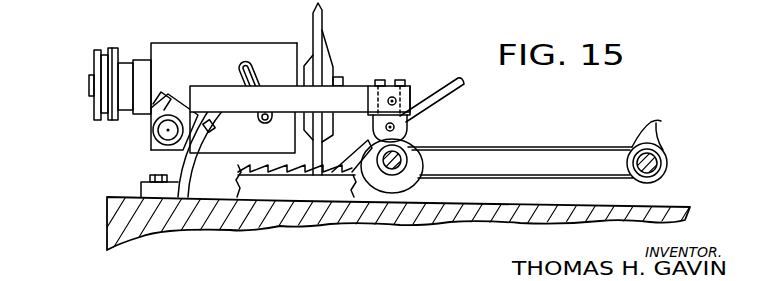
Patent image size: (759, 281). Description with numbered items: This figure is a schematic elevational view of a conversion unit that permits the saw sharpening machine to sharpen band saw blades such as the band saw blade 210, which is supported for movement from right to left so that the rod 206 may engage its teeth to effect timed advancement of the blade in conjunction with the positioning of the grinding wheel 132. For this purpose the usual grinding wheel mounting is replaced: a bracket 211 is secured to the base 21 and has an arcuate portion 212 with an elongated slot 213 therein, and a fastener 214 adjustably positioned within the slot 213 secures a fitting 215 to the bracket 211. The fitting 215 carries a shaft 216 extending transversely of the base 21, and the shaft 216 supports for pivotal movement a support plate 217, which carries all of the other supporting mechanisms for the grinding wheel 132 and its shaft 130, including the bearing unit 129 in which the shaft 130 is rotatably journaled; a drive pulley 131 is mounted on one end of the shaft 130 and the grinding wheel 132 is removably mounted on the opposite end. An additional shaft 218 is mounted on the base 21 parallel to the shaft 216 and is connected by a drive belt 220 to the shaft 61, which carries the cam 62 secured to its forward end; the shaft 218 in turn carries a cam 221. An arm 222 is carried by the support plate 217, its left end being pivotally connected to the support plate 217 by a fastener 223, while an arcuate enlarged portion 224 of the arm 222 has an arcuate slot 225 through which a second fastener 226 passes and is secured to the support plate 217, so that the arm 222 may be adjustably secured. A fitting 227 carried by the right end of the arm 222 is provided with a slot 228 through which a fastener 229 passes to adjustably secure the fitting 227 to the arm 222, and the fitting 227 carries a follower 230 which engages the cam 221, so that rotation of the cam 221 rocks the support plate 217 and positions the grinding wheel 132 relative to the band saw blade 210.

The base 21 is at (100, 228).
The shaft 61 is at (663, 150).
The cam 62 is at (661, 124).
The bearing unit 129 is at (144, 59).
The shaft 130 is at (89, 88).
The drive pulley 131 is at (107, 48).
The grinding wheel 132 is at (322, 30).
The rod 206 is at (443, 97).
The band saw blade 210 is at (307, 198).
The bracket 211 is at (187, 181).
The arcuate portion 212 is at (223, 88).
The elongated slot 213 is at (196, 153).
The fastener 214 is at (212, 128).
The fitting 215 is at (180, 93).
The shaft 216 is at (166, 130).
The support plate 217 is at (268, 55).
The shaft 218 is at (399, 156).
The drive belt 220 is at (533, 146).
The cam 221 is at (410, 178).
The arm 222 is at (350, 92).
The fastener 223 is at (198, 86).
The arcuate enlarged portion 224 is at (268, 122).
The arcuate slot 225 is at (255, 62).
The second fastener 226 is at (280, 80).
The fitting 227 is at (412, 80).
The slot 228 is at (392, 80).
The fastener 229 is at (388, 102).
The follower 230 is at (410, 128).